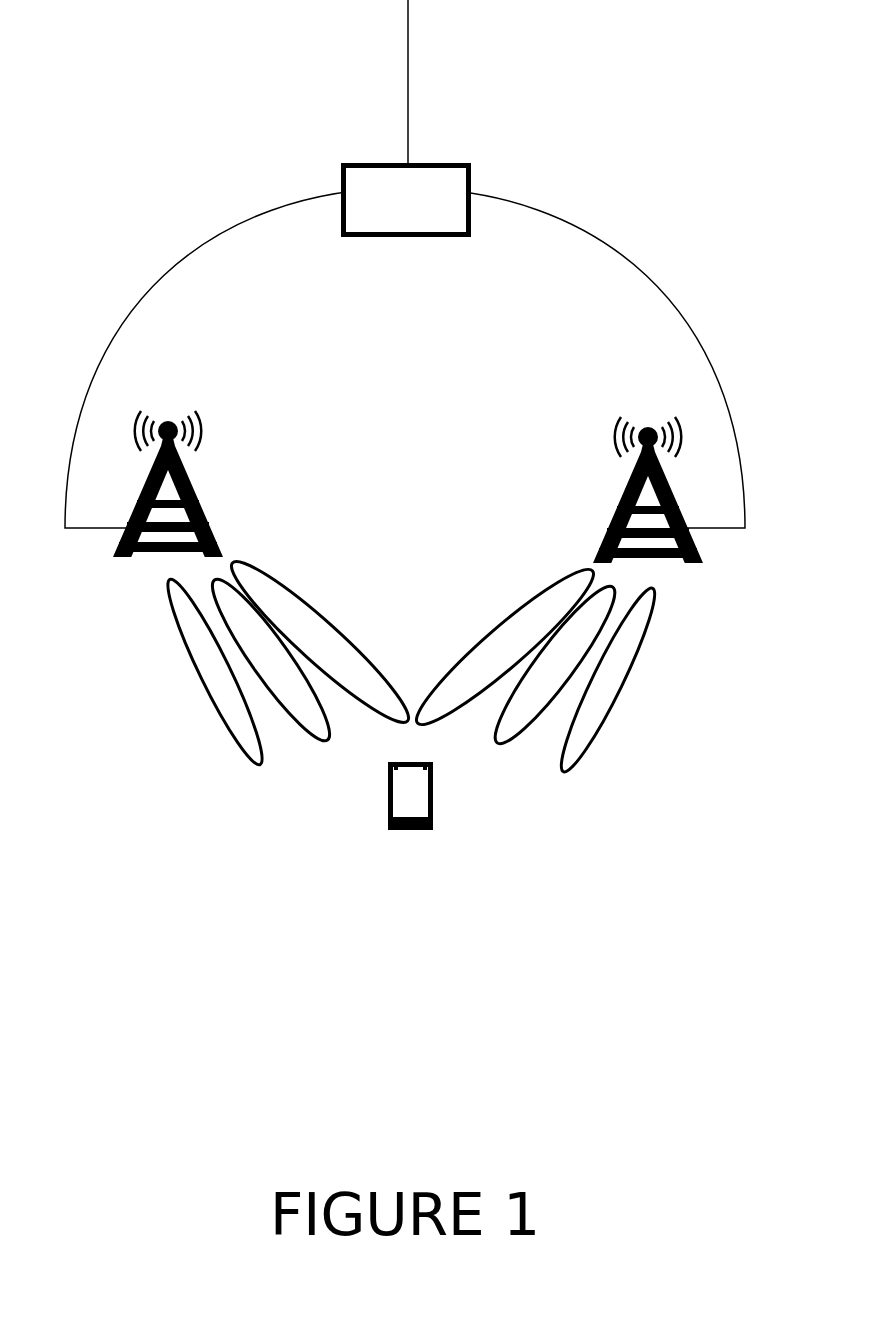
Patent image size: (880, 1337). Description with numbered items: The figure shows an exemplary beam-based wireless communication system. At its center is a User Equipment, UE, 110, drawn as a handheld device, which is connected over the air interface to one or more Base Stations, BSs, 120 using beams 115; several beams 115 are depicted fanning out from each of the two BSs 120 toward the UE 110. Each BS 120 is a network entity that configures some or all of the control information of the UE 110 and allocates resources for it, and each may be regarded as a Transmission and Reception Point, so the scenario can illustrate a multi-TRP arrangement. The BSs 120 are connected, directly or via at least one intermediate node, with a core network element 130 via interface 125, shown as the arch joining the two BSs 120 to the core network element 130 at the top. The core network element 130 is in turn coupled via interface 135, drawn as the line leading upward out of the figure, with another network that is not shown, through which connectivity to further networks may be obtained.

The User Equipment 110 is at (390, 830).
The beams 115 is at (187, 650).
The Base Station 120 is at (197, 507).
The interface 125 is at (131, 300).
The core network element 130 is at (431, 213).
The interface 135 is at (408, 105).